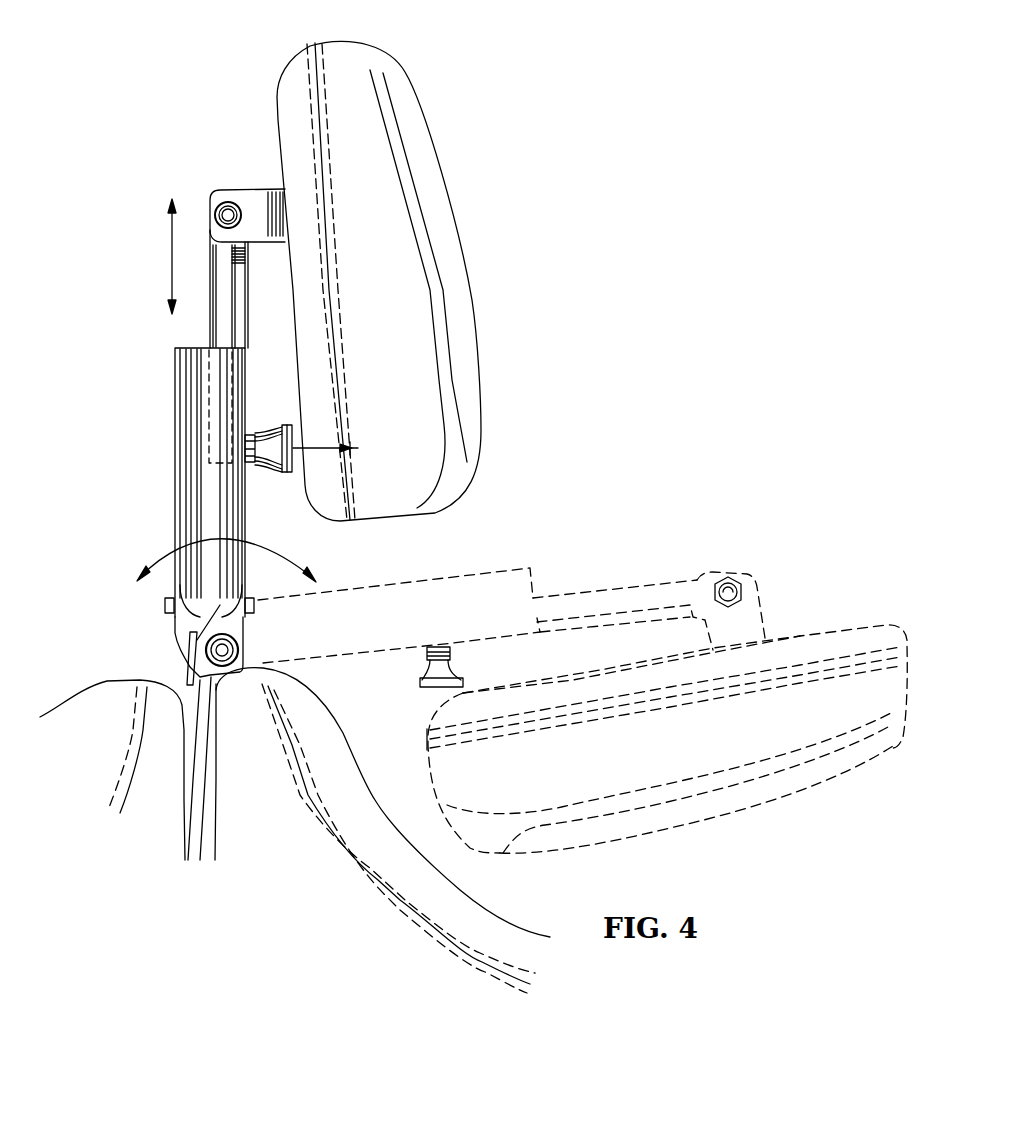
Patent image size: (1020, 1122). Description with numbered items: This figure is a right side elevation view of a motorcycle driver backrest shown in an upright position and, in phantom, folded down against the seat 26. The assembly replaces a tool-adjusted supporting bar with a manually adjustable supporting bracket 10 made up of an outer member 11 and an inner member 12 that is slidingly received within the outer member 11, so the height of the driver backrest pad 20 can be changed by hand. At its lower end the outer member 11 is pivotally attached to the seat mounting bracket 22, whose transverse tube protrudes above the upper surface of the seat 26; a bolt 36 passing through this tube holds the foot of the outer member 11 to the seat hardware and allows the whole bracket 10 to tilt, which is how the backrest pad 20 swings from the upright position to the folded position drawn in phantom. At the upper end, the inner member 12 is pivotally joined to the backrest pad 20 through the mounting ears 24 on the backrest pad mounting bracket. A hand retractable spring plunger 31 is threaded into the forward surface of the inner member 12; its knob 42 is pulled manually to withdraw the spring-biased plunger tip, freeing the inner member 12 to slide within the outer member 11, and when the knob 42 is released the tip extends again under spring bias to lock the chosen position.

The adjustable supporting bracket 10 is at (436, 418).
The outer member 11 is at (220, 333).
The inner member 12 is at (193, 507).
The driver backrest pad 20 is at (400, 108).
The seat mounting bracket 22 is at (203, 683).
The mounting ears 24 is at (257, 195).
The seat 26 is at (463, 908).
The spring plunger 31 is at (272, 408).
The bolt 36 is at (220, 650).
The knob 42 is at (283, 425).